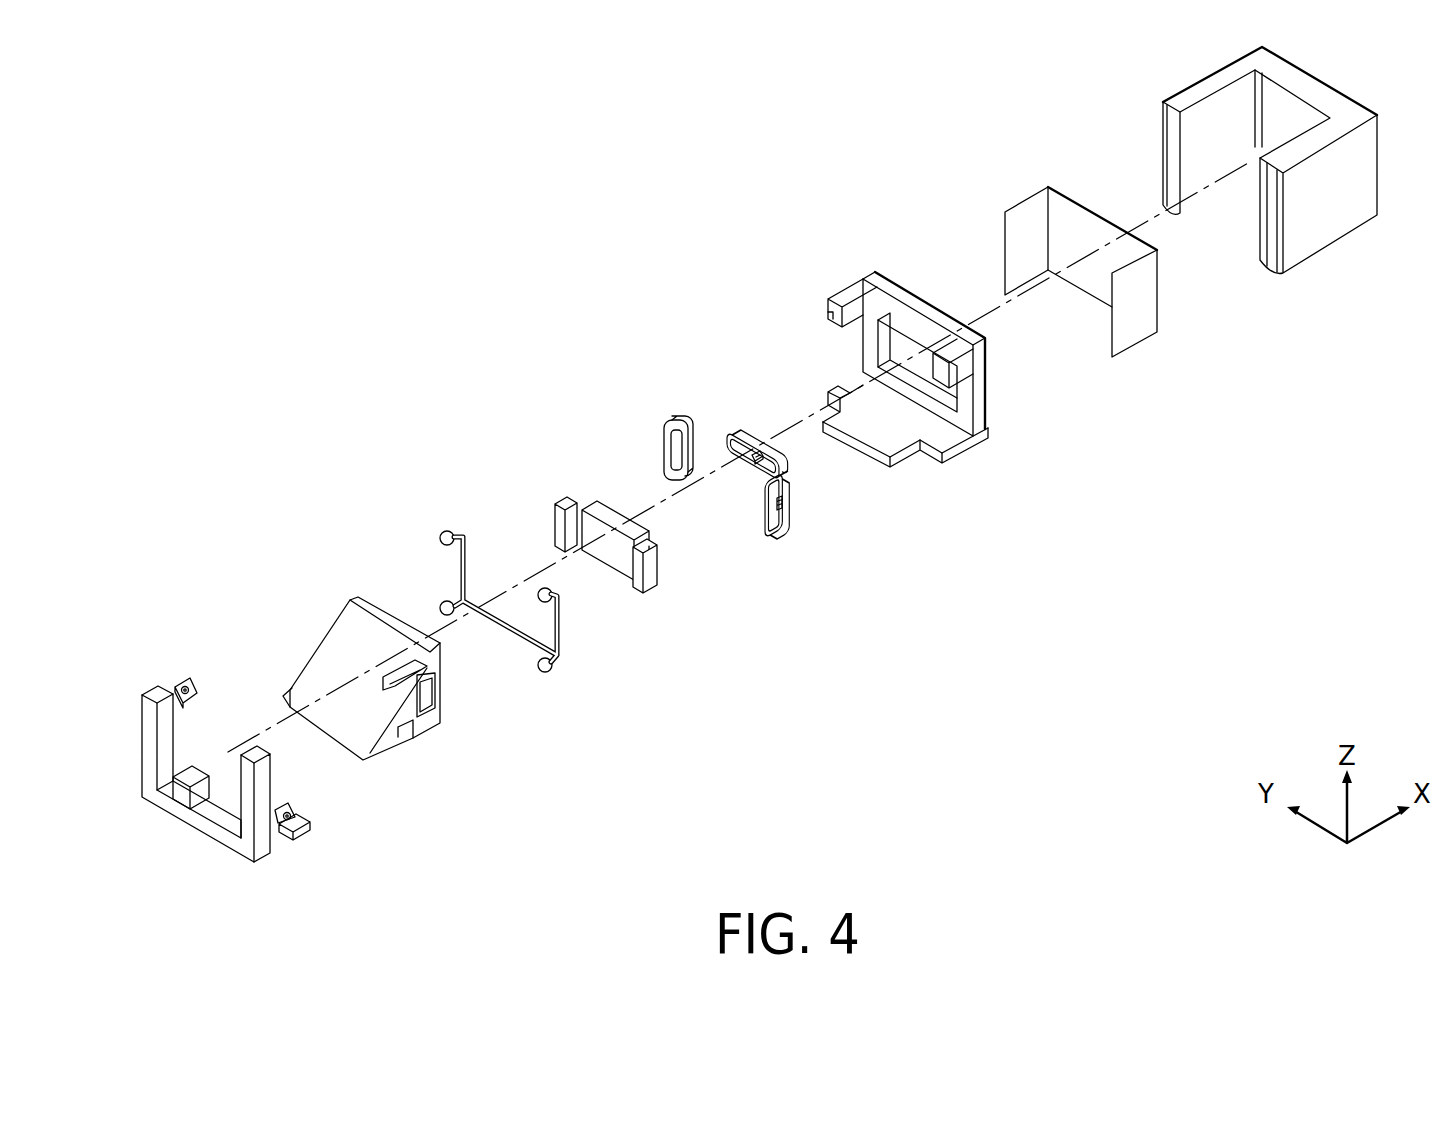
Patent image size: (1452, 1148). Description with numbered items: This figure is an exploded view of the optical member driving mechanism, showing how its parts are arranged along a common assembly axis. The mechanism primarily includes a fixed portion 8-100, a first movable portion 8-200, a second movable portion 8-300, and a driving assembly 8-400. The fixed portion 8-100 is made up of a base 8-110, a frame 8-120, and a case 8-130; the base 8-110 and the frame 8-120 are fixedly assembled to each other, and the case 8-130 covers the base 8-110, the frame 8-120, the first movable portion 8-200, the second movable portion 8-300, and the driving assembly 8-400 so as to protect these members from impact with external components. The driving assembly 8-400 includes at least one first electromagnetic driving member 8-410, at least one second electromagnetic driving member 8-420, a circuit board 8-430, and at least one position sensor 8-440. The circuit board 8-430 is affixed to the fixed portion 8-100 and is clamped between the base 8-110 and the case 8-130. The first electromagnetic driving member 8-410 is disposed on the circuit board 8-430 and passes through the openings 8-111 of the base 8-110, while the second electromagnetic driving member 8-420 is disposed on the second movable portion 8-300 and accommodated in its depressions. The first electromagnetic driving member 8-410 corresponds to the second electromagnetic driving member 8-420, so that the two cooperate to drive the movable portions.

The fixed portion 8-100 is at (216, 348).
The base 8-110 is at (930, 372).
The openings 8-111 is at (905, 348).
The frame 8-120 is at (273, 830).
The case 8-130 is at (1343, 222).
The first movable portion 8-200 is at (558, 640).
The second movable portion 8-300 is at (387, 735).
The driving assembly 8-400 is at (216, 133).
The first electromagnetic driving member 8-410 is at (765, 510).
The second electromagnetic driving member 8-420 is at (593, 507).
The circuit board 8-430 is at (1140, 333).
The position sensor 8-440 is at (815, 555).